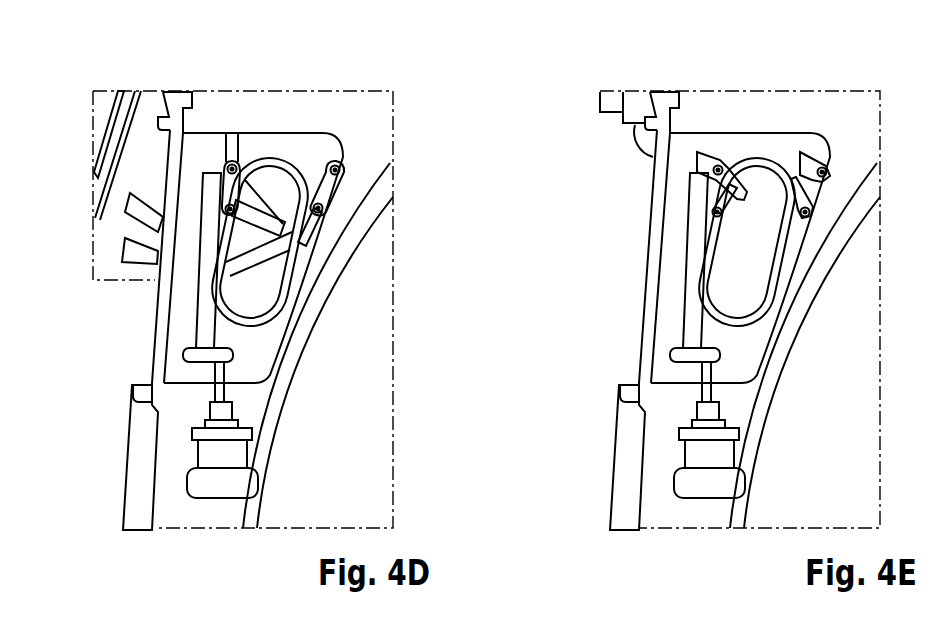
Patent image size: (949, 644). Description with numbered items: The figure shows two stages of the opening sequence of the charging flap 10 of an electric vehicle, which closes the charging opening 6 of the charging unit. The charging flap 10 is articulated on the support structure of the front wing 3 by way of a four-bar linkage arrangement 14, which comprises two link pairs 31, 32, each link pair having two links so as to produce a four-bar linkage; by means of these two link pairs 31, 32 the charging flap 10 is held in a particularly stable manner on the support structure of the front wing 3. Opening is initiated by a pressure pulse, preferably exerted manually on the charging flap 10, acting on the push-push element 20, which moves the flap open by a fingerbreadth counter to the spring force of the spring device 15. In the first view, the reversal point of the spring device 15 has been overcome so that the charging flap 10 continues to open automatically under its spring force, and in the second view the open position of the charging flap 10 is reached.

In FIG. 4D, the front wing 3 is at (139, 490).
In FIG. 4E, the front wing 3 is at (609, 456).
In FIG. 4D, the charging opening 6 is at (268, 178).
In FIG. 4E, the charging opening 6 is at (747, 187).
In FIG. 4D, the charging flap 10 is at (108, 110).
In FIG. 4E, the charging flap 10 is at (622, 93).
In FIG. 4D, the four-bar linkage arrangement 14 is at (374, 113).
In FIG. 4E, the four-bar linkage arrangement 14 is at (827, 292).
In FIG. 4D, the spring device 15 is at (207, 316).
In FIG. 4E, the spring device 15 is at (642, 260).
In FIG. 4D, the push-push element 20 is at (207, 357).
In FIG. 4E, the push-push element 20 is at (658, 423).
In FIG. 4D, the first link pair 31 is at (215, 149).
In FIG. 4E, the first link pair 31 is at (720, 129).
In FIG. 4D, the second link pair 32 is at (313, 151).
In FIG. 4E, the second link pair 32 is at (808, 129).